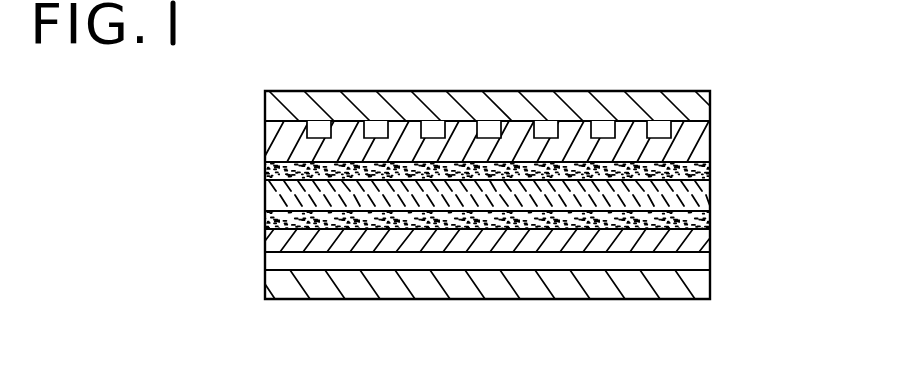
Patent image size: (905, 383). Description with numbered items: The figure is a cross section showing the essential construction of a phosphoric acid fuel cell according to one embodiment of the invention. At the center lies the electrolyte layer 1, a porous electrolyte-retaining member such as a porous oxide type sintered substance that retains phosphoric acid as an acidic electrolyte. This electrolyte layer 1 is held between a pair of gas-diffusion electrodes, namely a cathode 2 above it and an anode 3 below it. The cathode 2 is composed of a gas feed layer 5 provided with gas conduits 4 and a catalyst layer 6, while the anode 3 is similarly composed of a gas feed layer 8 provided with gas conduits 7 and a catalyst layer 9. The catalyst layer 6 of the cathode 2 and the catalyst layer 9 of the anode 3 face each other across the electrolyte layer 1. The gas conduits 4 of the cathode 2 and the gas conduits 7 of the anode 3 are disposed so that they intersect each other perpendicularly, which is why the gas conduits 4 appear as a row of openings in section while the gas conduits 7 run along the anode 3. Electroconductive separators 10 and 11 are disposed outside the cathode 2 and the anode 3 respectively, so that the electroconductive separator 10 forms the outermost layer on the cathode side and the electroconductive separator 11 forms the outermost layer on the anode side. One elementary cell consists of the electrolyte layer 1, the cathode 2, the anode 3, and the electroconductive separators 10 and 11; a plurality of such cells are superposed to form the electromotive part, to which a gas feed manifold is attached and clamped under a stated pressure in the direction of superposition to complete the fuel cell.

The electrolyte layer 1 is at (712, 192).
The cathode 2 is at (553, 110).
The anode 3 is at (553, 280).
The gas conduits 4 is at (657, 128).
The gas feed layer 5 is at (716, 162).
The catalyst layer 6 is at (712, 170).
The gas conduits 7 is at (620, 257).
The gas feed layer 8 is at (716, 230).
The catalyst layer 9 is at (712, 218).
The electroconductive separator 10 is at (588, 106).
The electroconductive separator 11 is at (545, 286).